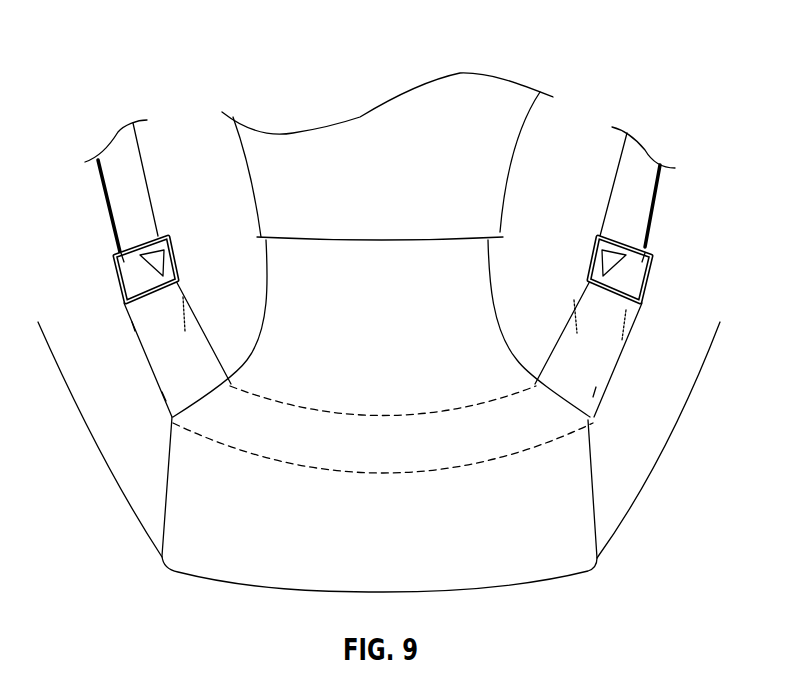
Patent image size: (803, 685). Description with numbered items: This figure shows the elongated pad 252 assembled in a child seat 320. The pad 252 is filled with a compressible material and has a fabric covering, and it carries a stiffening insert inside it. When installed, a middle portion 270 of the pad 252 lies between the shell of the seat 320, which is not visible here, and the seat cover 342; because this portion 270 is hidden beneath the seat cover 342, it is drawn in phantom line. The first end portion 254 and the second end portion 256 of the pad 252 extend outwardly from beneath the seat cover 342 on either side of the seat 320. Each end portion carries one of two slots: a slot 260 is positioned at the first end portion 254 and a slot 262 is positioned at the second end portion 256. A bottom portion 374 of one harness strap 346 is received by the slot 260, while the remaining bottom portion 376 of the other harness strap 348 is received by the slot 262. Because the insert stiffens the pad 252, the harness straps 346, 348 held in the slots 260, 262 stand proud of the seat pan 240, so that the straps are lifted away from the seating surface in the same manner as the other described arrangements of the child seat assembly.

The seat 320 is at (497, 52).
The seat pan 240 is at (425, 277).
The elongated pad 252 is at (217, 360).
The first end portion 254 is at (185, 298).
The second end portion 256 is at (633, 311).
The slot 260 is at (161, 345).
The slot 262 is at (578, 368).
The portion of the pad 270 is at (363, 475).
The seat cover 342 is at (196, 558).
The harness strap 346 is at (132, 180).
The harness strap 348 is at (638, 187).
The bottom portion 374 is at (139, 287).
The remaining bottom portion 376 is at (620, 272).